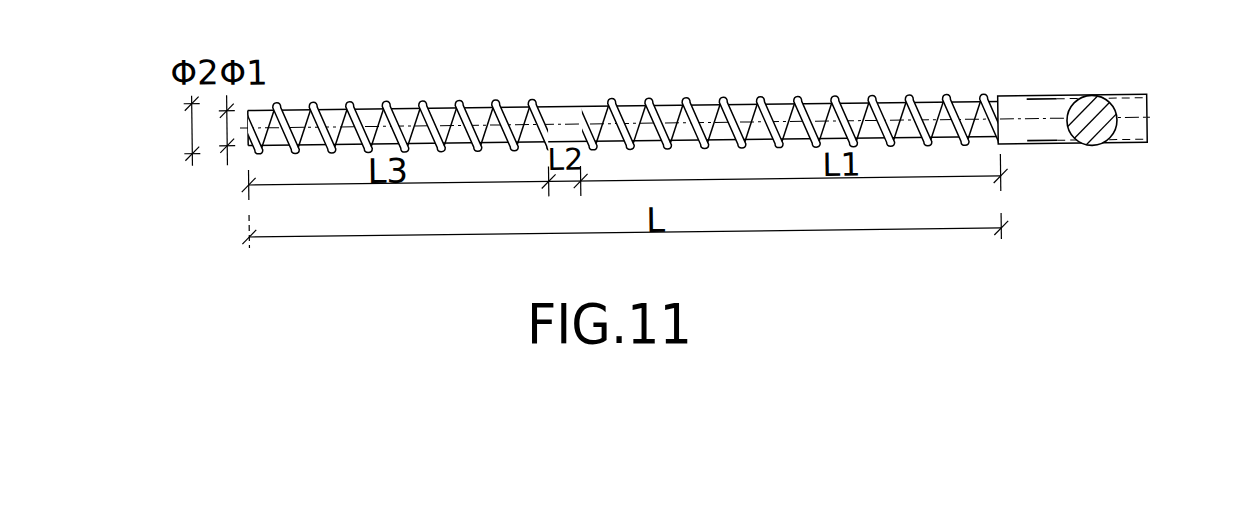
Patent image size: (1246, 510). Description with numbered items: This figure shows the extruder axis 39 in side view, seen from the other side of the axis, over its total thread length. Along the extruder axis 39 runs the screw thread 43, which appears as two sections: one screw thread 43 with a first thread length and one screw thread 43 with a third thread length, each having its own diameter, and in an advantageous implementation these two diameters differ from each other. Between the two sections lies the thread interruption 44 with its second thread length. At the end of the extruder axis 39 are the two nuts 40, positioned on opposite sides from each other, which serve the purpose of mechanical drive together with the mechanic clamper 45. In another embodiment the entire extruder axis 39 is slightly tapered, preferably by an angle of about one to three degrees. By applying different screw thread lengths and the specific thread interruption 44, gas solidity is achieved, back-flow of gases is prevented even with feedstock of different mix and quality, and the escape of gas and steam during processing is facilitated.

The extruder axis 39 is at (1015, 106).
The nuts 40 is at (1057, 110).
The screw thread 43 is at (397, 110).
The thread interruption 44 is at (567, 112).
The mechanic clamper 45 is at (1115, 120).